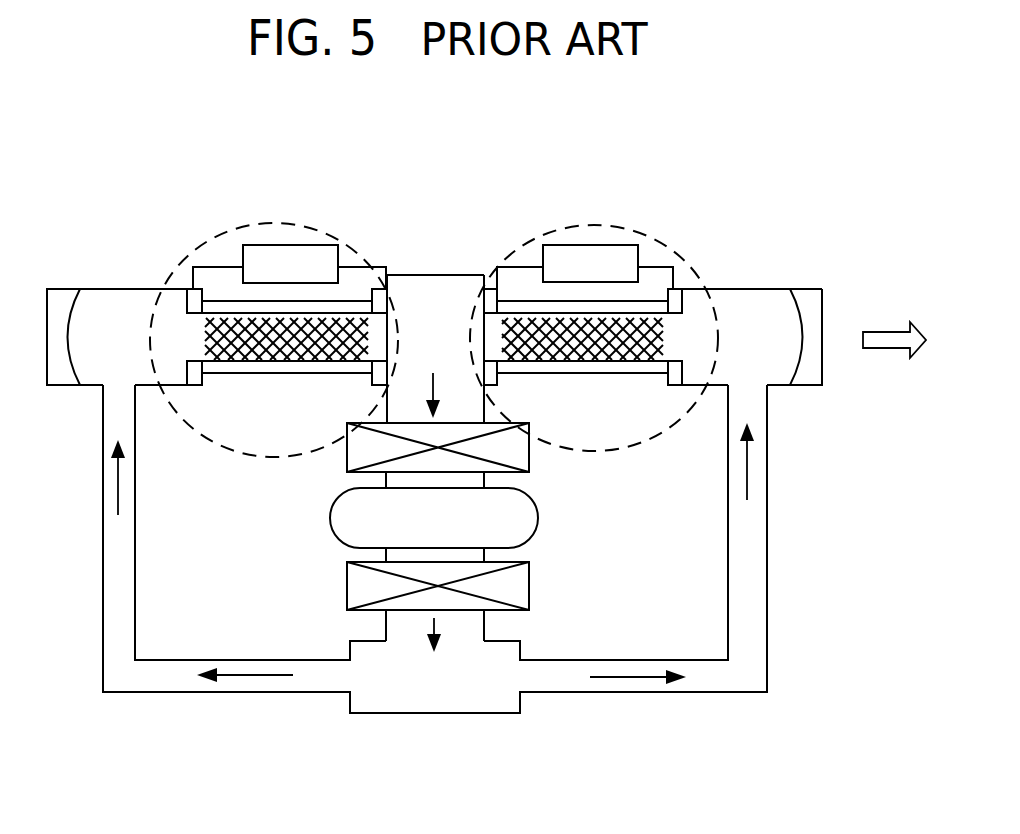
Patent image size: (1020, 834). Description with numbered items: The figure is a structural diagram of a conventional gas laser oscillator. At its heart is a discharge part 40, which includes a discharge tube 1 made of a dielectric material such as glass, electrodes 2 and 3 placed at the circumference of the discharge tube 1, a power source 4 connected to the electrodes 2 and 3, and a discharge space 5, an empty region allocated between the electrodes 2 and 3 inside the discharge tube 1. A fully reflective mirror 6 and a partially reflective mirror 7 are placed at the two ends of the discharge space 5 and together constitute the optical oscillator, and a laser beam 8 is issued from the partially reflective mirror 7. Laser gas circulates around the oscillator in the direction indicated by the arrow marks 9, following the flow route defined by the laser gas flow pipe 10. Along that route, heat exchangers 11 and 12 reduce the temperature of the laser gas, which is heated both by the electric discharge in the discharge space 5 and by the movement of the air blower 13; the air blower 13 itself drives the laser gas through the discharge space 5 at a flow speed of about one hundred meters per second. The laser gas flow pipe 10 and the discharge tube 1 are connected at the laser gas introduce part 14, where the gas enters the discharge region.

The discharge tube 1 is at (278, 368).
The electrode 2 is at (196, 375).
The electrode 3 is at (374, 378).
The power source 4 is at (298, 245).
The discharge space 5 is at (313, 344).
The fully reflective mirror 6 is at (62, 386).
The partially reflective mirror 7 is at (814, 289).
The laser beam 8 is at (892, 346).
The arrow mark 9 is at (117, 483).
The laser gas flow pipe 10 is at (136, 562).
The heat exchanger 11 is at (533, 450).
The heat exchanger 12 is at (533, 587).
The air blower 13 is at (540, 523).
The laser gas introduce part 14 is at (102, 395).
The discharge part 40 is at (230, 230).